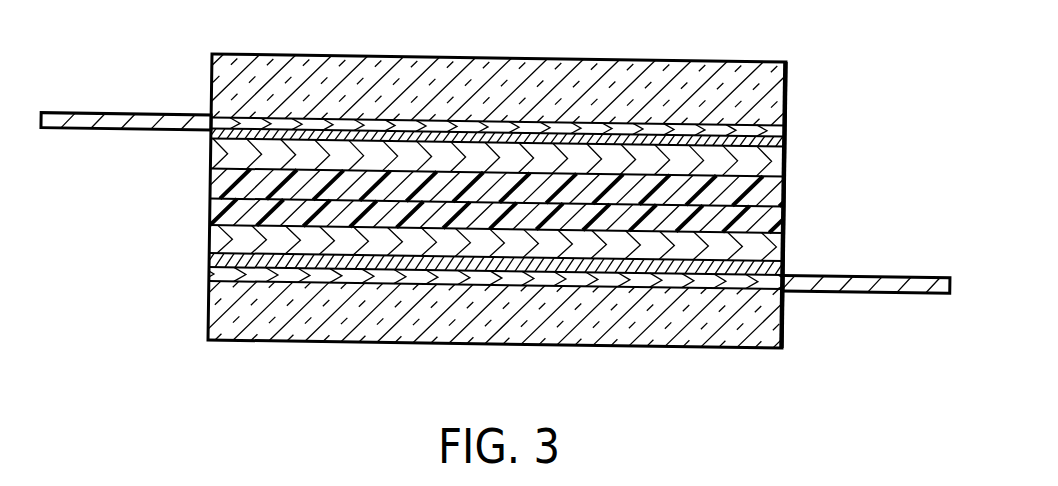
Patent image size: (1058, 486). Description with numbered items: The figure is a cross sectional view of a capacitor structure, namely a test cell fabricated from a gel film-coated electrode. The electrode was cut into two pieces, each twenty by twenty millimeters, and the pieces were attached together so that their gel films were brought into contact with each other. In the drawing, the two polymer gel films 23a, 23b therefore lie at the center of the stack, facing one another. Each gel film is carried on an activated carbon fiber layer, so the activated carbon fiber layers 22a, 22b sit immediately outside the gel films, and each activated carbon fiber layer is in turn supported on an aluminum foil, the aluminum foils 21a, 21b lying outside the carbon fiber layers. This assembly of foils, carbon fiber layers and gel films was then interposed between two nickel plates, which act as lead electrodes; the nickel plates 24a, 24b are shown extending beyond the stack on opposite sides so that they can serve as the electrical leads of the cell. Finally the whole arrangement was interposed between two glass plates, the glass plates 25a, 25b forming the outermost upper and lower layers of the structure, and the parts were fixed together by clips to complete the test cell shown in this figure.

The aluminum foil 21a is at (786, 146).
The activated carbon fiber layer 22a is at (772, 170).
The polymer gel film 23a is at (777, 196).
The polymer gel film 23b is at (772, 223).
The activated carbon fiber layer 22b is at (772, 252).
The aluminum foil 21b is at (788, 272).
The nickel plate (lead electrode) 24a is at (110, 123).
The nickel plate (lead electrode) 24b is at (865, 293).
The glass plate 25a is at (720, 72).
The glass plate 25b is at (313, 338).